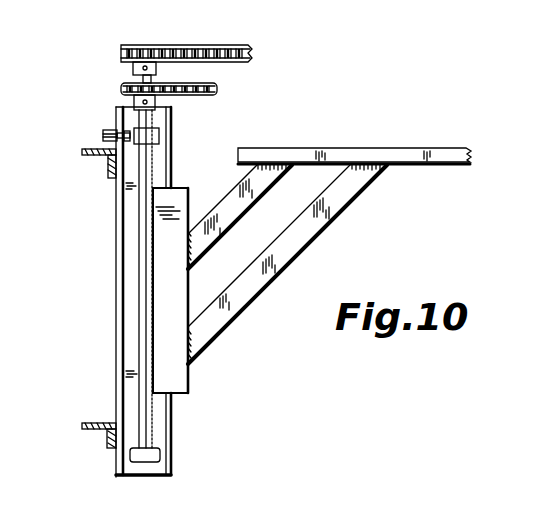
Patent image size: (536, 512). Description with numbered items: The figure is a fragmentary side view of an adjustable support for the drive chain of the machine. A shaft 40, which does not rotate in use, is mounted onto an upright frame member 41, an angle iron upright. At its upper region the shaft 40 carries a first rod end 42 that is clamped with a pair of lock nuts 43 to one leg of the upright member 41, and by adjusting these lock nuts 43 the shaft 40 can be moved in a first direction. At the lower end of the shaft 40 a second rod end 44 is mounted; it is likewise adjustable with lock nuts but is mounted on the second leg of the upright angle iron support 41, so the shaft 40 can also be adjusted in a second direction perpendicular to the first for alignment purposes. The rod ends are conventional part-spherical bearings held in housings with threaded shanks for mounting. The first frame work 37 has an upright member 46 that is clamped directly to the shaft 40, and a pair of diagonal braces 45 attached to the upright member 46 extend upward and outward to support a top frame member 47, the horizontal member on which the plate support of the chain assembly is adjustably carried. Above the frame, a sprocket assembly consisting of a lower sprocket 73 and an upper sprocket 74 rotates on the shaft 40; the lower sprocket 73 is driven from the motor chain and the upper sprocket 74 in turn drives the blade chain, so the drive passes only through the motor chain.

The first frame work 37 is at (320, 233).
The shaft 40 is at (142, 235).
The upright frame member 41 is at (121, 375).
The first rod end 42 is at (160, 131).
The lock nuts 43 is at (124, 129).
The second rod end 44 is at (157, 456).
The diagonal braces 45 is at (263, 187).
The upright member 46 is at (175, 284).
The top frame member 47 is at (444, 156).
The lower sprocket 73 is at (122, 91).
The upper sprocket 74 is at (147, 54).